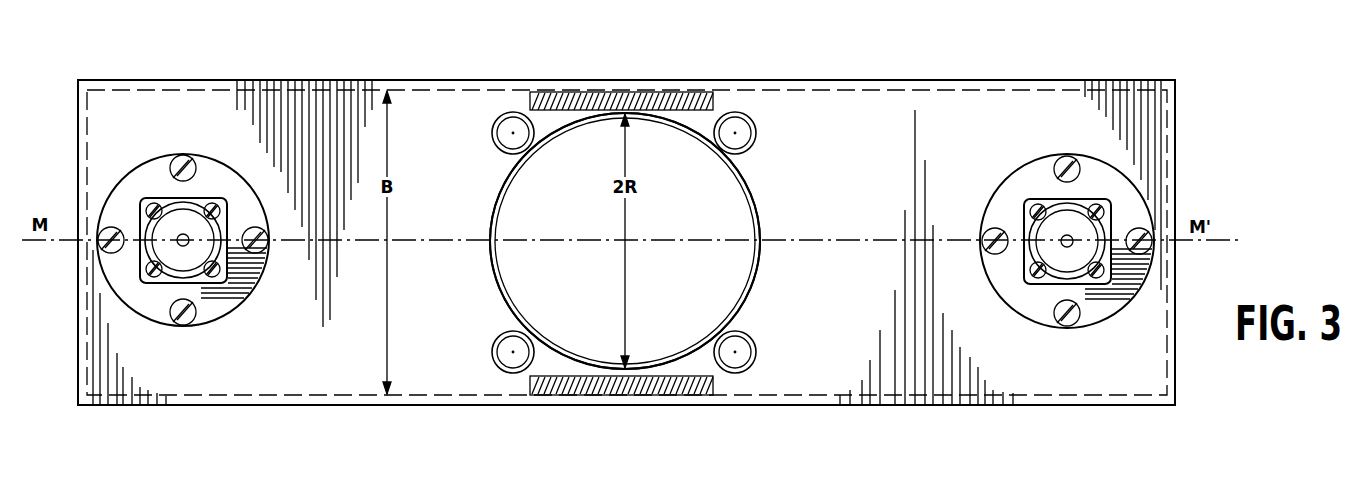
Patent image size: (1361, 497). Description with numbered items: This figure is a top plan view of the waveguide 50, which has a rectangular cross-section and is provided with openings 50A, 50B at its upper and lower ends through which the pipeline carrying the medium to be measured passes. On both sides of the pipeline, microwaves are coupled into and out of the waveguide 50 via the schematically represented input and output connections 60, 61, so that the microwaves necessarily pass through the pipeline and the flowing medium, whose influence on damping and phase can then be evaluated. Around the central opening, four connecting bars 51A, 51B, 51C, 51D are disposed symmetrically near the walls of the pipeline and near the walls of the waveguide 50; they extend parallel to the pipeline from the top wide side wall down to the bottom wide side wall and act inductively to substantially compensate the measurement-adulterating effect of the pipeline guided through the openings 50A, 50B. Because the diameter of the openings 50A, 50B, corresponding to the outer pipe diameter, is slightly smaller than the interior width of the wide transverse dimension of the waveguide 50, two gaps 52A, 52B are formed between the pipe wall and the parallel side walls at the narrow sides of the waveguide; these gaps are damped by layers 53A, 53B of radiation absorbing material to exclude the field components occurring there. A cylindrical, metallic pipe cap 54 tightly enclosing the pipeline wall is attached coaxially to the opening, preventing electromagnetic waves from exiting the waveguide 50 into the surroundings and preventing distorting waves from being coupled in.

The waveguide 50 is at (1097, 82).
The opening 50A is at (732, 213).
The opening 50B is at (732, 213).
The connecting bar 51A is at (514, 111).
The connecting bar 51B is at (736, 126).
The connecting bar 51C is at (508, 373).
The connecting bar 51D is at (737, 373).
The gap 52A is at (642, 387).
The gap 52B is at (646, 101).
The layer of radiation absorbing material 53A is at (592, 396).
The layer of radiation absorbing material 53B is at (592, 92).
The pipe cap 54 is at (750, 293).
The input connection 60 is at (218, 250).
The output connection 61 is at (1028, 252).